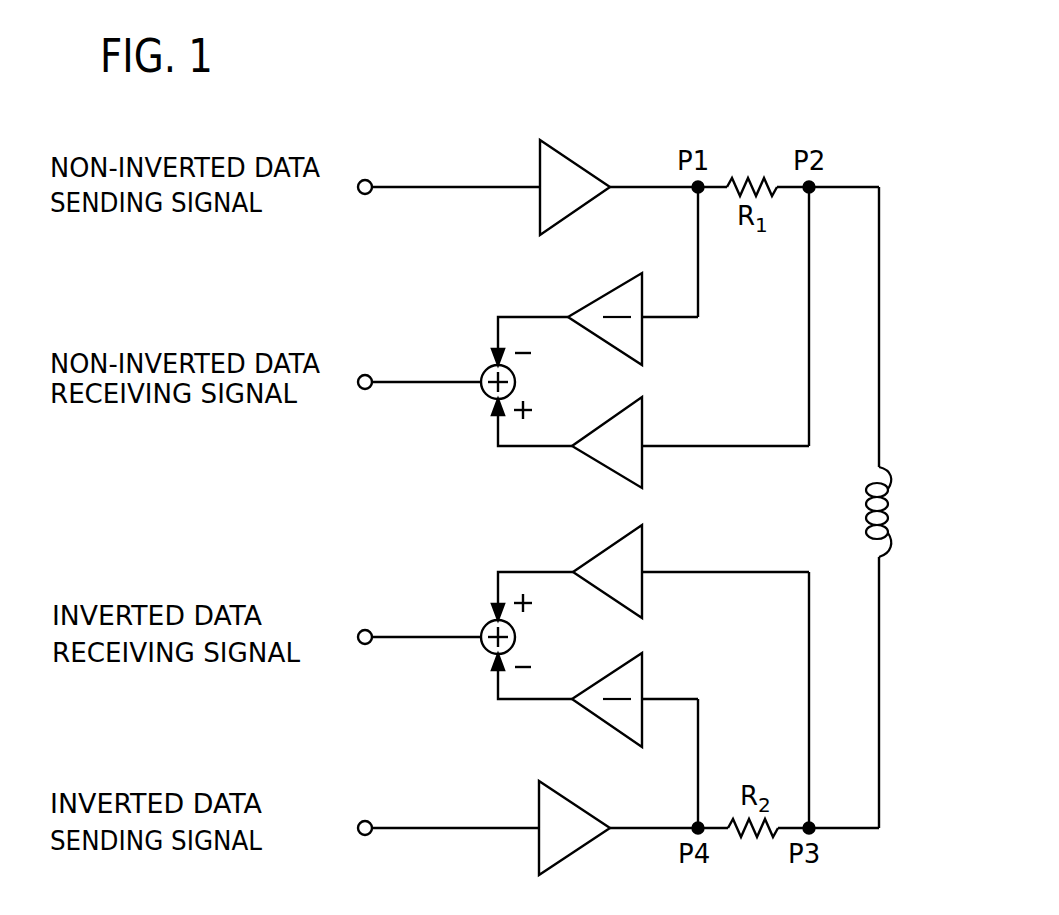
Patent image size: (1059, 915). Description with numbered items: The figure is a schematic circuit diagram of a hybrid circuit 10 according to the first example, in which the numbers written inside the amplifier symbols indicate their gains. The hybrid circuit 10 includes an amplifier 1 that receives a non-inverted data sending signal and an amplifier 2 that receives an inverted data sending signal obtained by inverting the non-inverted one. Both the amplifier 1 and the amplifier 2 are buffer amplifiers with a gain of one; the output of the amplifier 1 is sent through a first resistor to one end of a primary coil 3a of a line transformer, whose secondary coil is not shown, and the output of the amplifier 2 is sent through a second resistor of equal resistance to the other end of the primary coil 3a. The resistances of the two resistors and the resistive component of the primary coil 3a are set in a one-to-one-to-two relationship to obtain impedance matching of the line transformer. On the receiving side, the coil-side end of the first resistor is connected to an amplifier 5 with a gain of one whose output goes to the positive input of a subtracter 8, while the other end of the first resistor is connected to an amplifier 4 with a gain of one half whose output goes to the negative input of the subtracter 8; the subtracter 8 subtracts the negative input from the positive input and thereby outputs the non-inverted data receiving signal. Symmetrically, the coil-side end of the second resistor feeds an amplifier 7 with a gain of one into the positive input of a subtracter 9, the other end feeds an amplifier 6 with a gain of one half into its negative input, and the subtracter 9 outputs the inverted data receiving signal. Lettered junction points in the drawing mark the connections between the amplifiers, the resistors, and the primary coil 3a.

The amplifier 1 is at (545, 205).
The amplifier 2 is at (544, 806).
The primary coil 3a is at (868, 532).
The amplifier 4 is at (597, 303).
The amplifier 5 is at (599, 428).
The amplifier 6 is at (603, 687).
The amplifier 7 is at (597, 562).
The subtracter 8 is at (483, 370).
The subtracter 9 is at (483, 626).
The hybrid circuit 10 is at (676, 118).